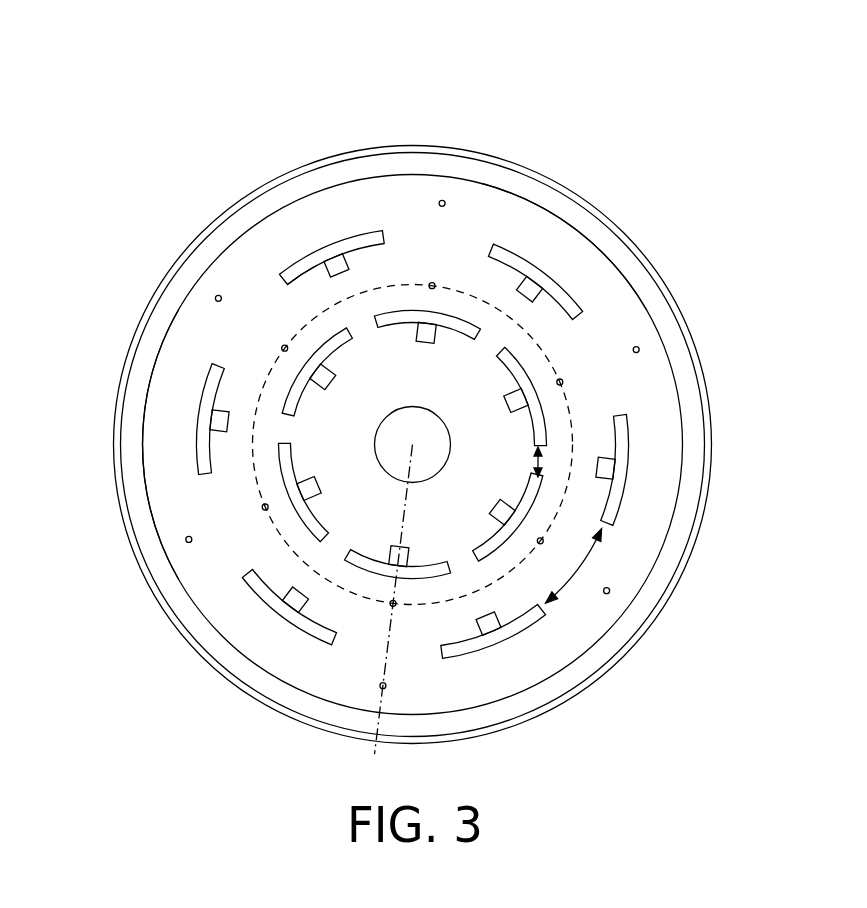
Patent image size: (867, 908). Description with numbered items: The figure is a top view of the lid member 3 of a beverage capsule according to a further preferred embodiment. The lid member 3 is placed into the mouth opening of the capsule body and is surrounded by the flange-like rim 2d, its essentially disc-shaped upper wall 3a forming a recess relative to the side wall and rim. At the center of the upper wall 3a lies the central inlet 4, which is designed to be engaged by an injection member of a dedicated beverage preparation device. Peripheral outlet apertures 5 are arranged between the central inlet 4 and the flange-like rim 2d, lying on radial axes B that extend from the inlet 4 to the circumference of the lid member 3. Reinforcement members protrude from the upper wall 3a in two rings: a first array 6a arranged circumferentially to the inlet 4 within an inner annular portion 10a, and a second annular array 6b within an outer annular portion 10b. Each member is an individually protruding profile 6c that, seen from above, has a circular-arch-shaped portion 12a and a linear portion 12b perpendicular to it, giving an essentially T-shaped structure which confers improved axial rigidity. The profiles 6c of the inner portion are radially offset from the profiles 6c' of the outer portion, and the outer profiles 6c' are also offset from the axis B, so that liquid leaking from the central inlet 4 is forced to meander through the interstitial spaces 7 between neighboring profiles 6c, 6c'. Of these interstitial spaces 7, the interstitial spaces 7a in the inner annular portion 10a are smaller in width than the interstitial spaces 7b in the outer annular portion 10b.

The flange-like rim 2d is at (479, 173).
The lid member 3 is at (623, 270).
The upper wall 3a is at (568, 264).
The central inlet 4 is at (382, 440).
The peripheral outlet apertures 5 is at (641, 348).
The first array of reinforcement members 6a is at (288, 393).
The second annular array of reinforcement members 6b is at (210, 392).
The profiles 6c is at (491, 517).
The profiles of the outer annular portion 6c' is at (272, 217).
The outer arc-shaped rib 7 is at (458, 241).
The interstitial spaces between inner reinforcement members 7a is at (521, 462).
The interstitial spaces between outer reinforcement members 7b is at (582, 566).
The inner annular portion 10a is at (288, 523).
The outer annular portion 10b is at (153, 447).
The circular-arch-shaped portion 12a is at (368, 240).
The linear portion 12b is at (335, 266).
The radial axis B is at (373, 755).